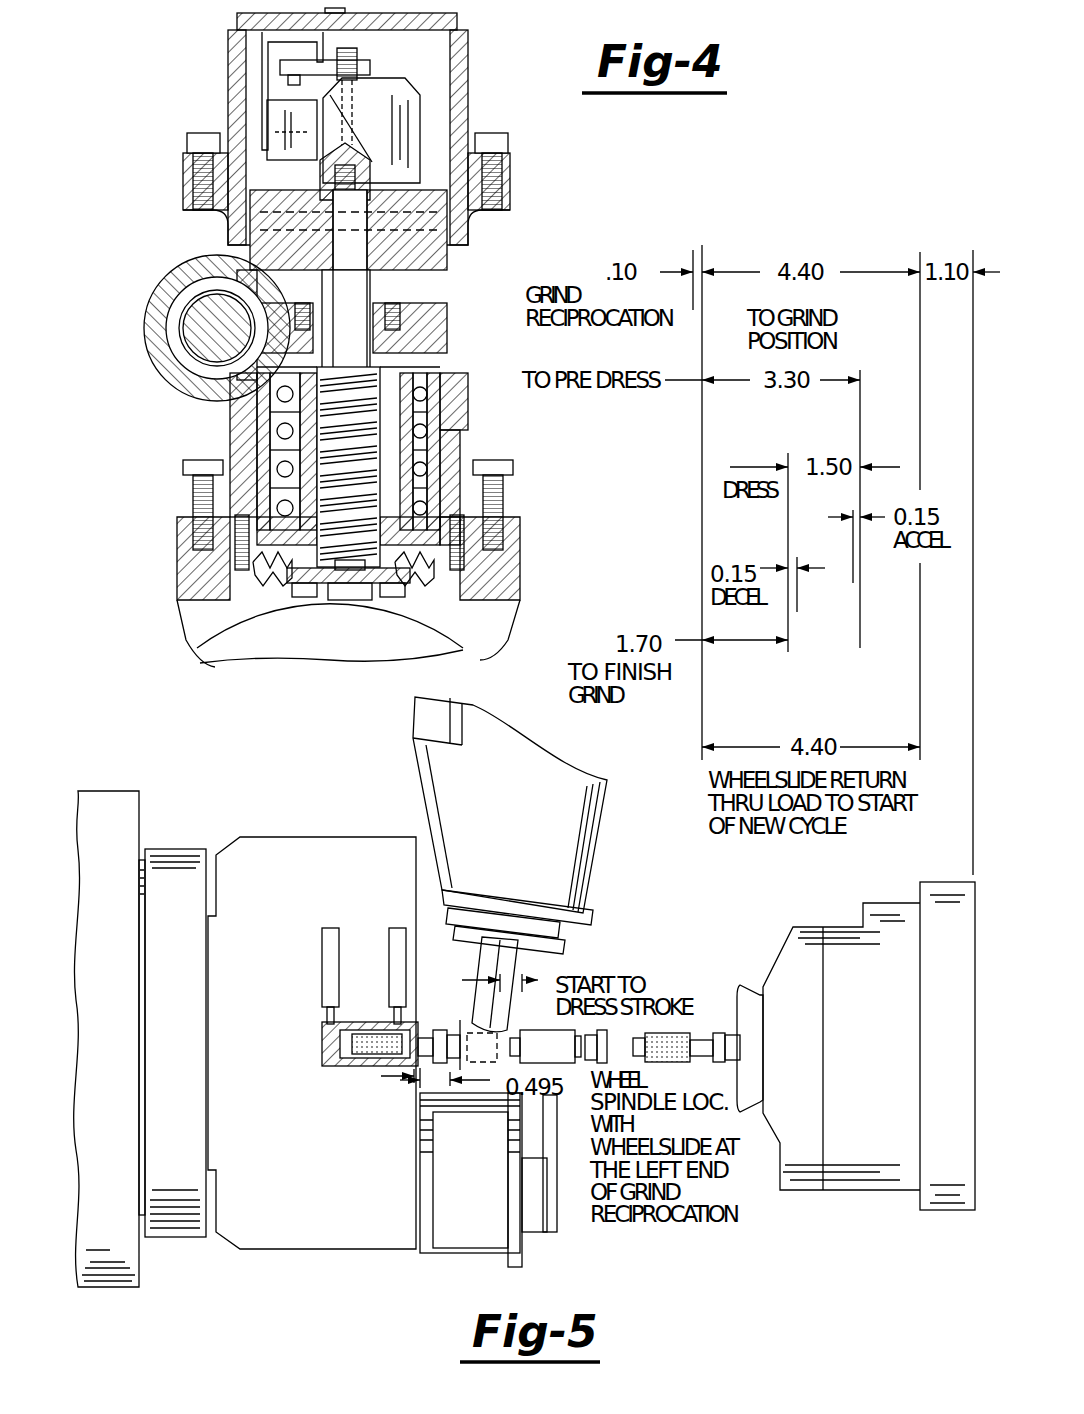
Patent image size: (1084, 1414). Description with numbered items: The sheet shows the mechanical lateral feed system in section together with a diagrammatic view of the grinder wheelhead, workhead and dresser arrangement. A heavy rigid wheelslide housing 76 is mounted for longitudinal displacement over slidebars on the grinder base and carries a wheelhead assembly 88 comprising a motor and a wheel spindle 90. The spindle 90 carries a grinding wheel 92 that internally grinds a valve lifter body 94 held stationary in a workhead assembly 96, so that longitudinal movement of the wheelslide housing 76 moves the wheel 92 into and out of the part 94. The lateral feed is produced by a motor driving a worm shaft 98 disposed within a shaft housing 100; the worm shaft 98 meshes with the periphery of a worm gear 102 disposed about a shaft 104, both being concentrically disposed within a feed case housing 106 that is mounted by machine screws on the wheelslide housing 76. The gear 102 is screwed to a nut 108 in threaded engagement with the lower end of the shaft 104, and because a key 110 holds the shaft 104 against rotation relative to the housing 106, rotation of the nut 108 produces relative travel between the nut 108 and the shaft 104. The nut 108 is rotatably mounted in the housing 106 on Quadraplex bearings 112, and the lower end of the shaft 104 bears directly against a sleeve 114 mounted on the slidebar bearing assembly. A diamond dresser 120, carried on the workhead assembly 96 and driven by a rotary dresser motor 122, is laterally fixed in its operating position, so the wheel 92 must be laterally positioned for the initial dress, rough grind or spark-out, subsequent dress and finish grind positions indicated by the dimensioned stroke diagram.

In FIG. 4, the wheelslide housing 76 is at (522, 545).
In FIG. 5, the wheelhead assembly 88 is at (880, 903).
In FIG. 5, the wheel spindle 90 is at (700, 1035).
In FIG. 5, the grinding wheel 92 is at (657, 1034).
In FIG. 5, the valve lifter body 94 is at (338, 1068).
In FIG. 5, the workhead assembly 96 is at (175, 826).
In FIG. 4, the worm shaft 98 is at (187, 338).
In FIG. 4, the shaft housing 100 is at (175, 276).
In FIG. 4, the worm gear 102 is at (225, 258).
In FIG. 4, the shaft 104 is at (445, 276).
In FIG. 4, the housing 106 is at (466, 426).
In FIG. 4, the nut 108 is at (447, 370).
In FIG. 4, the key 110 is at (478, 236).
In FIG. 4, the Quadraplex bearings 112 is at (466, 440).
In FIG. 4, the sleeve 114 is at (460, 628).
In FIG. 5, the diamond dresser 120 is at (520, 962).
In FIG. 5, the rotary dresser motor 122 is at (595, 888).